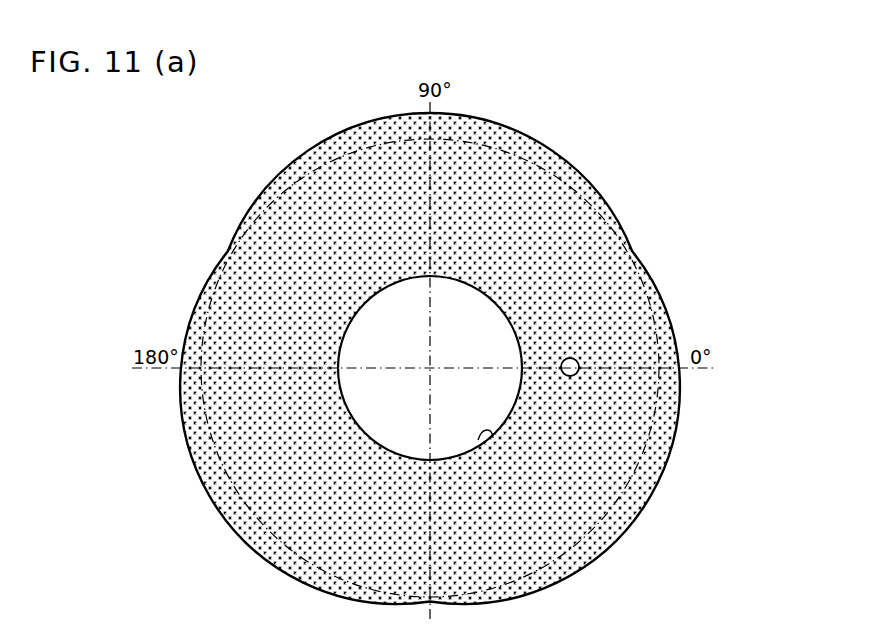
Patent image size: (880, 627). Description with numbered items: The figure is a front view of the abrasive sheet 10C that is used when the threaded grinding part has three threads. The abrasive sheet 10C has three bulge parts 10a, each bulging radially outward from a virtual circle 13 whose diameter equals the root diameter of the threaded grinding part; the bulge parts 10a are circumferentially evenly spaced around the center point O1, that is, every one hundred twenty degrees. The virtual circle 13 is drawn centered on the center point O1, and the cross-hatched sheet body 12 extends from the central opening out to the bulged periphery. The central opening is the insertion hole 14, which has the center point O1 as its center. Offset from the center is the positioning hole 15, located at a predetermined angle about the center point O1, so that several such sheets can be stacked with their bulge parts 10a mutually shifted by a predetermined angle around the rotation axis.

The abrasive sheet 10C is at (407, 349).
The bulge part 10a is at (468, 128).
The core body 12 is at (444, 349).
The virtual circle 13 is at (540, 133).
The insertion hole 14 is at (493, 438).
The positioning hole 15 is at (578, 372).
The center point O1 is at (430, 368).